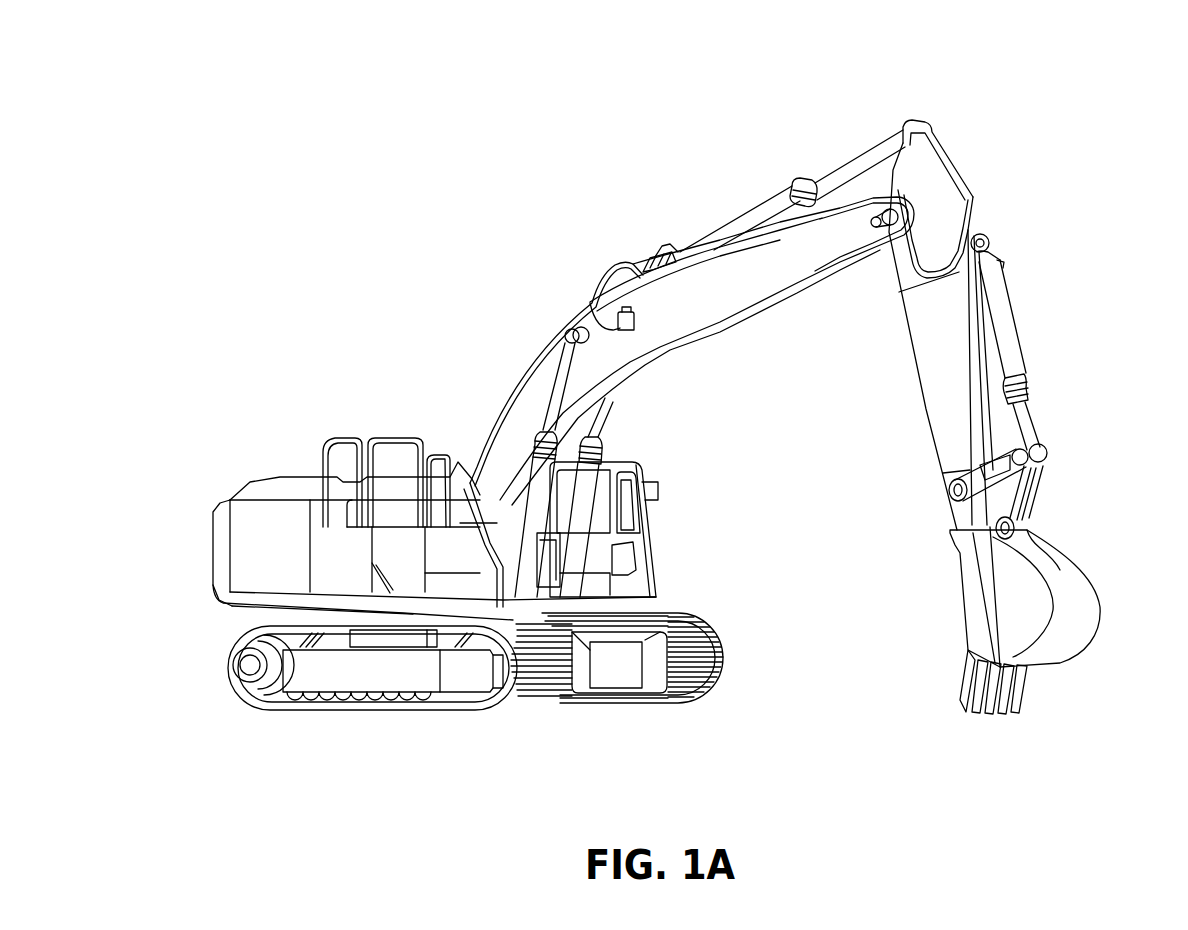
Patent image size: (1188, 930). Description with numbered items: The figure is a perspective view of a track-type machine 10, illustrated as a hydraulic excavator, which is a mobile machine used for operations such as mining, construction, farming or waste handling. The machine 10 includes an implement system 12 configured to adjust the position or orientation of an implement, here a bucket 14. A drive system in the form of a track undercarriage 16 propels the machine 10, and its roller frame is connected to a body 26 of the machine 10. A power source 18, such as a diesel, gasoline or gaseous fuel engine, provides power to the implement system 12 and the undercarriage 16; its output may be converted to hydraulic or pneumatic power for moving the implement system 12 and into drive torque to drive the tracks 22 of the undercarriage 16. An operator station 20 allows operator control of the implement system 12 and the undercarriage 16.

The track-type machine 10 is at (1037, 108).
The implement system 12 is at (980, 213).
The bucket 14 is at (1013, 622).
The track undercarriage 16 is at (260, 707).
The power source 18 is at (282, 478).
The operator station 20 is at (627, 523).
The tracks 22 is at (552, 705).
The body 26 is at (325, 579).